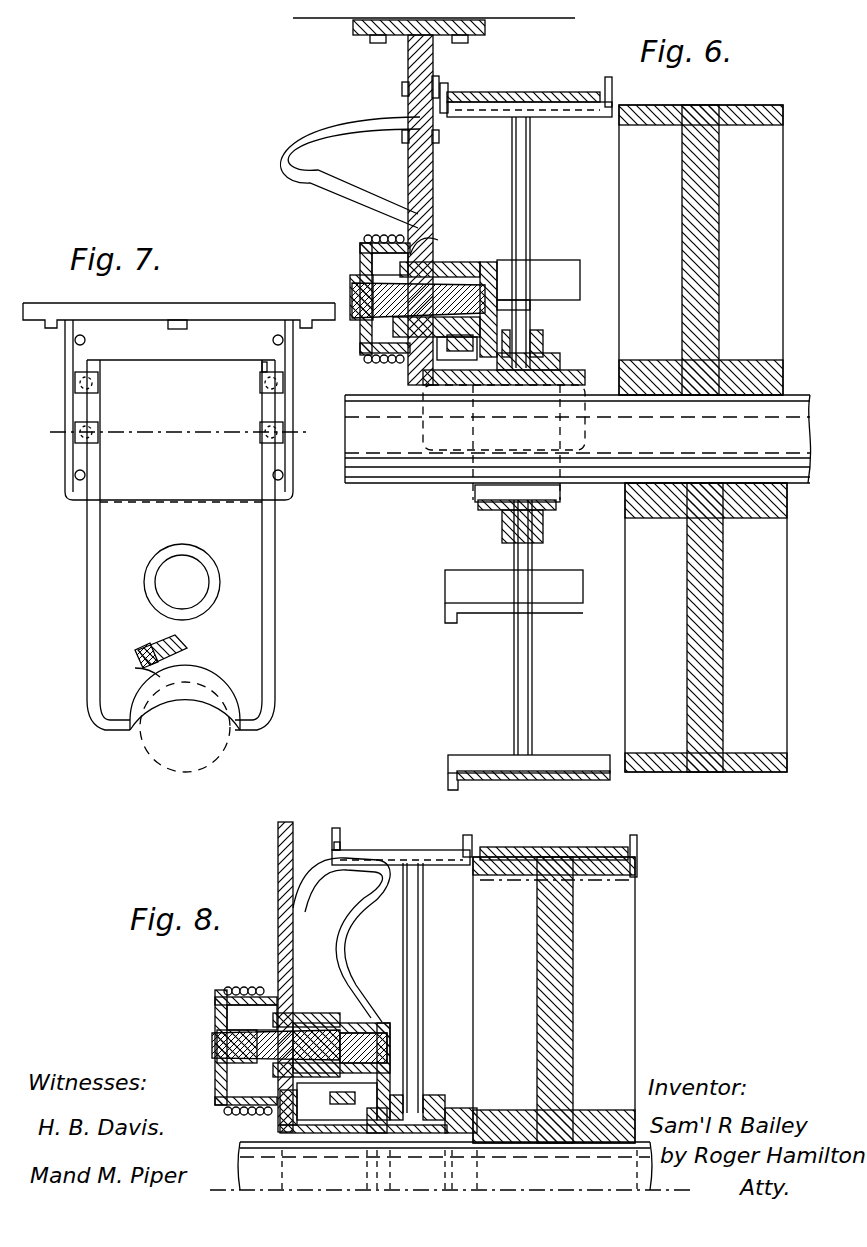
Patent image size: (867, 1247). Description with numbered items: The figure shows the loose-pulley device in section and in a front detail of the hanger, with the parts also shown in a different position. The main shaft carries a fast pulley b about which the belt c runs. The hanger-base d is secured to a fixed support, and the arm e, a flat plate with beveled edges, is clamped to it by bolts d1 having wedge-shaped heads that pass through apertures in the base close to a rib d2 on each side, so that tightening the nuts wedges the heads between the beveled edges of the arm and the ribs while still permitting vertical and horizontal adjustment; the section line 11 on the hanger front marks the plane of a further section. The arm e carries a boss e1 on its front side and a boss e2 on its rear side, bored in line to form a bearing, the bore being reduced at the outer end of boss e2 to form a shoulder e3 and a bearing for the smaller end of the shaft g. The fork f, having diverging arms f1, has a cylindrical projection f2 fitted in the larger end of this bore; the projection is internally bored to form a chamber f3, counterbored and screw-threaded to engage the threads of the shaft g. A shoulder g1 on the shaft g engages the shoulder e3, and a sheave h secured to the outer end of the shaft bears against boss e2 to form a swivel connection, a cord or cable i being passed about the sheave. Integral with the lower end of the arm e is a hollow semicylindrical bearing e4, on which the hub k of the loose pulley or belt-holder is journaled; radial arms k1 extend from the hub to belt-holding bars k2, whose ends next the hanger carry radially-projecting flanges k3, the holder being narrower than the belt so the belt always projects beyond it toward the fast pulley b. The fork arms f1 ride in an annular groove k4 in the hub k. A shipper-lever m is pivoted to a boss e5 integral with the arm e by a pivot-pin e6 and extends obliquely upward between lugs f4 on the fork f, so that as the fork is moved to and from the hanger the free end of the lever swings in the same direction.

In FIG. 6, the fast pulley b is at (758, 773).
In FIG. 8, the fast pulley b is at (620, 972).
In FIG. 6, the belt c is at (570, 782).
In FIG. 8, the belt c is at (527, 847).
In FIG. 6, the hanger-base d is at (392, 38).
In FIG. 7, the hanger-base d is at (200, 312).
In FIG. 6, the bolts d1 is at (402, 89).
In FIG. 7, the bolts d1 is at (284, 383).
In FIG. 6, the rib d2 is at (433, 58).
In FIG. 7, the rib d2 is at (75, 383).
In FIG. 6, the arm e is at (432, 190).
In FIG. 7, the arm e is at (262, 535).
In FIG. 8, the arm e is at (285, 977).
In FIG. 6, the boss e1 is at (440, 268).
In FIG. 7, the boss e1 is at (146, 582).
In FIG. 8, the boss e1 is at (318, 1013).
In FIG. 6, the boss e2 is at (390, 264).
In FIG. 8, the boss e2 is at (258, 1020).
In FIG. 6, the shoulder e3 is at (360, 276).
In FIG. 8, the shoulder e3 is at (240, 1032).
In FIG. 6, the hollow semicylindrical bearing e4 is at (582, 376).
In FIG. 7, the hollow semicylindrical bearing e4 is at (235, 690).
In FIG. 8, the hollow semicylindrical bearing e4 is at (365, 1125).
In FIG. 7, the boss e5 is at (135, 668).
In FIG. 7, the pivot-pin e6 is at (135, 652).
In FIG. 6, the fork f is at (498, 280).
In FIG. 8, the fork f is at (382, 1053).
In FIG. 6, the diverging arms f1 is at (512, 350).
In FIG. 8, the diverging arms f1 is at (410, 1100).
In FIG. 6, the cylindrical projection f2 is at (442, 262).
In FIG. 8, the cylindrical projection f2 is at (390, 1030).
In FIG. 6, the chamber f3 is at (500, 306).
In FIG. 8, the chamber f3 is at (388, 1043).
In FIG. 6, the lugs f4 is at (473, 350).
In FIG. 8, the lugs f4 is at (392, 1080).
In FIG. 6, the stud or shaft g is at (354, 300).
In FIG. 8, the stud or shaft g is at (213, 1048).
In FIG. 8, the shoulder g1 is at (296, 1012).
In FIG. 6, the sheave h is at (356, 246).
In FIG. 8, the sheave h is at (215, 995).
In FIG. 6, the cord or cable i is at (380, 236).
In FIG. 8, the cord or cable i is at (251, 987).
In FIG. 6, the hub k is at (545, 372).
In FIG. 8, the hub k is at (458, 1108).
In FIG. 6, the radial arms k1 is at (530, 195).
In FIG. 8, the radial arms k1 is at (415, 965).
In FIG. 6, the belt-holding bar k2 is at (560, 100).
In FIG. 8, the belt-holding bar k2 is at (405, 850).
In FIG. 6, the radially-projecting flanges k3 is at (448, 88).
In FIG. 8, the radially-projecting flanges k3 is at (338, 842).
In FIG. 6, the annular groove k4 is at (488, 515).
In FIG. 8, the annular groove k4 is at (365, 1110).
In FIG. 6, the shipper-lever m is at (347, 190).
In FIG. 7, the shipper-lever m is at (185, 647).
In FIG. 8, the shipper-lever m is at (342, 945).
In FIG. 7, the section line 11 is at (184, 432).